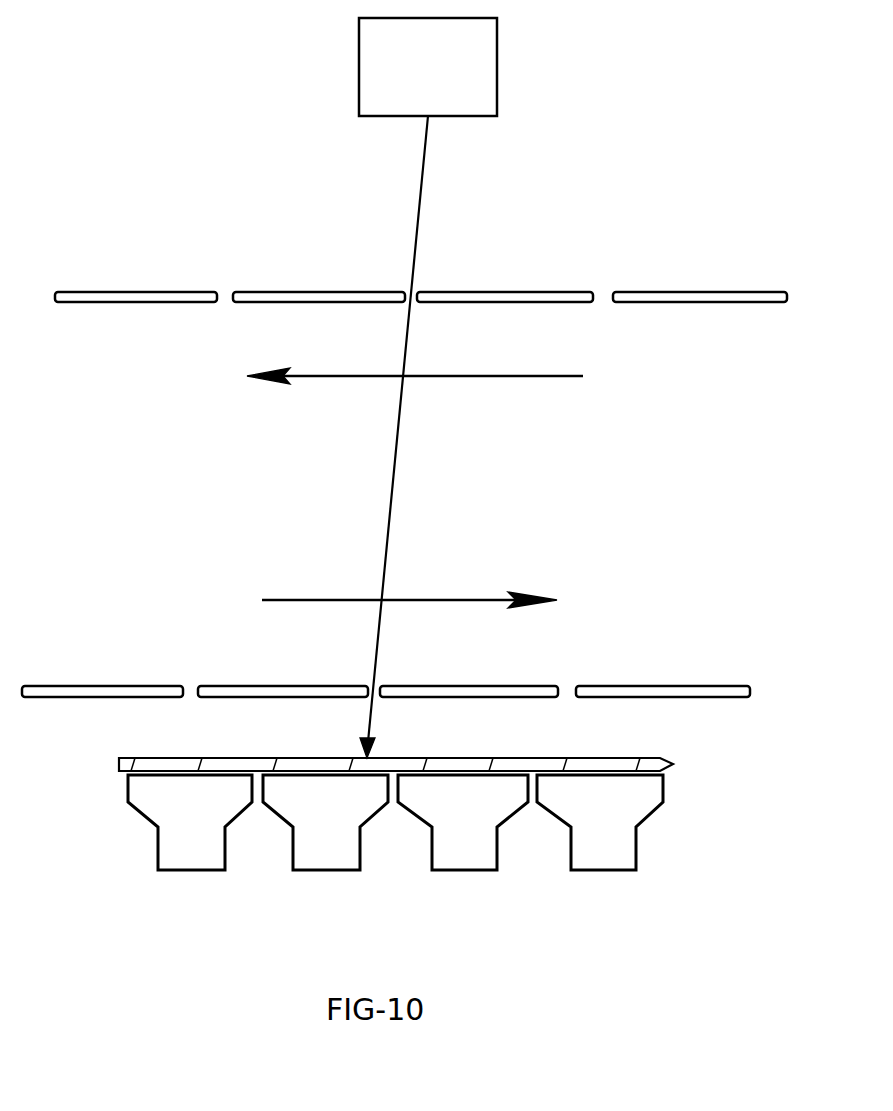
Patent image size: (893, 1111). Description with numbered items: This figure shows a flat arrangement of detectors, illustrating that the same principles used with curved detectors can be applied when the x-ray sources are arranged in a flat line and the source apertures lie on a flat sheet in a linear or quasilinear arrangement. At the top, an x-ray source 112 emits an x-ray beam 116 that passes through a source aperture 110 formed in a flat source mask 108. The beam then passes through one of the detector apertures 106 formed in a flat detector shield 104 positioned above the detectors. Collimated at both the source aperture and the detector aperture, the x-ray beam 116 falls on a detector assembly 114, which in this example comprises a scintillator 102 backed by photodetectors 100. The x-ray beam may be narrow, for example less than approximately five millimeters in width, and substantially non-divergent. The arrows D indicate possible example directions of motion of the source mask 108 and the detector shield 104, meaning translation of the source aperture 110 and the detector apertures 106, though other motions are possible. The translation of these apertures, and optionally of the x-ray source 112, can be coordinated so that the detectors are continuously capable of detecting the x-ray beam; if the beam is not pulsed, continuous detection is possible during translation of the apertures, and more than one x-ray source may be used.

The photodetectors 100 is at (613, 848).
The scintillator 102 is at (655, 763).
The detector shield 104 is at (712, 690).
The detector apertures 106 is at (570, 688).
The source mask 108 is at (555, 302).
The source aperture 110 is at (224, 303).
The x-ray source 112 is at (468, 71).
The detector assembly 114 is at (135, 853).
The x-ray beam 116 is at (393, 542).
The directions of motion D is at (392, 378).